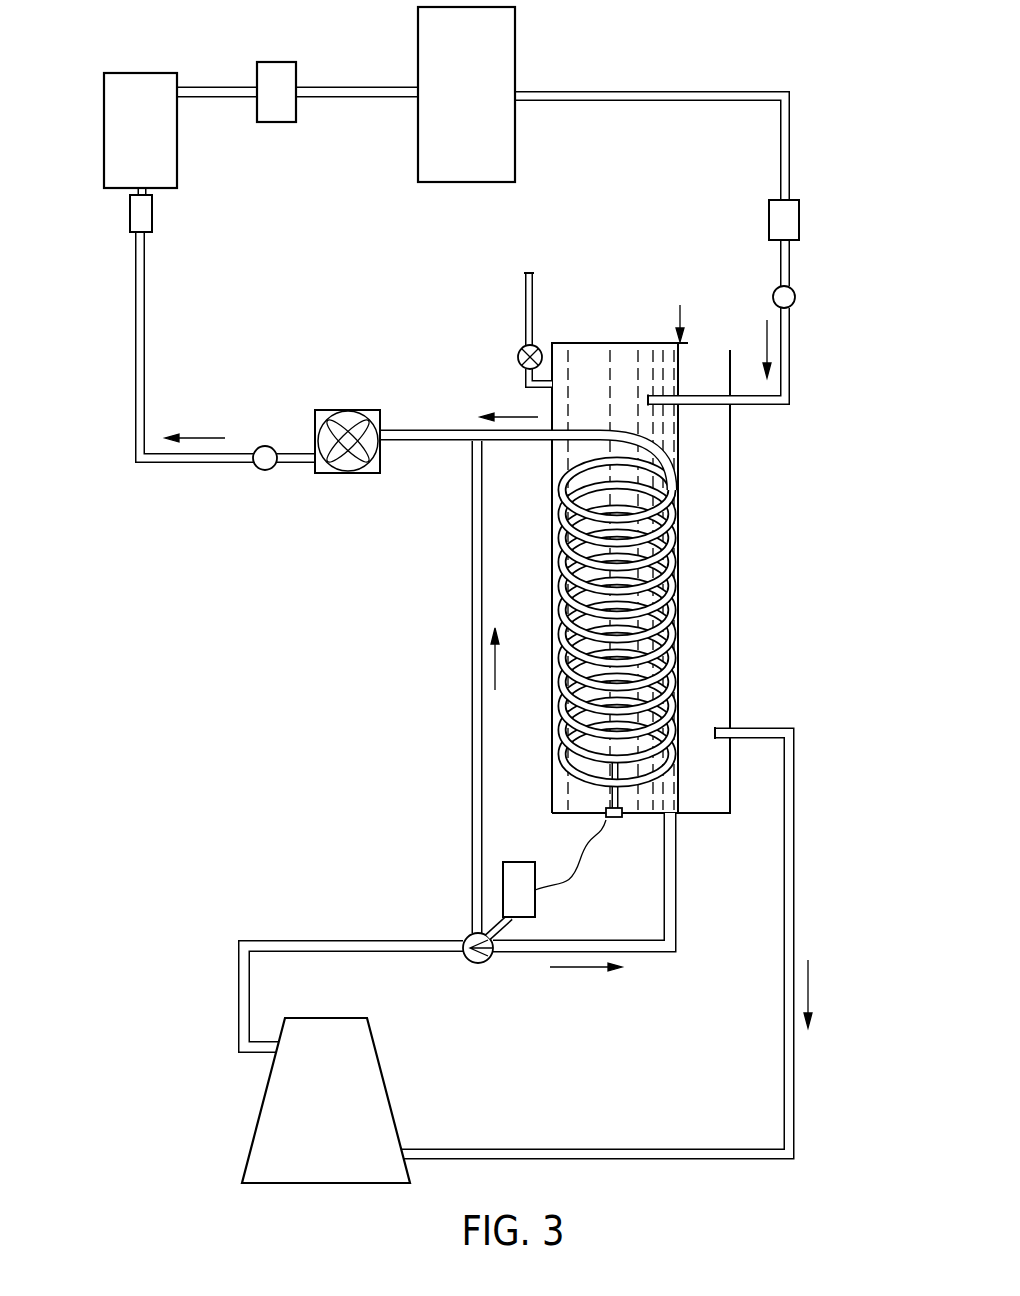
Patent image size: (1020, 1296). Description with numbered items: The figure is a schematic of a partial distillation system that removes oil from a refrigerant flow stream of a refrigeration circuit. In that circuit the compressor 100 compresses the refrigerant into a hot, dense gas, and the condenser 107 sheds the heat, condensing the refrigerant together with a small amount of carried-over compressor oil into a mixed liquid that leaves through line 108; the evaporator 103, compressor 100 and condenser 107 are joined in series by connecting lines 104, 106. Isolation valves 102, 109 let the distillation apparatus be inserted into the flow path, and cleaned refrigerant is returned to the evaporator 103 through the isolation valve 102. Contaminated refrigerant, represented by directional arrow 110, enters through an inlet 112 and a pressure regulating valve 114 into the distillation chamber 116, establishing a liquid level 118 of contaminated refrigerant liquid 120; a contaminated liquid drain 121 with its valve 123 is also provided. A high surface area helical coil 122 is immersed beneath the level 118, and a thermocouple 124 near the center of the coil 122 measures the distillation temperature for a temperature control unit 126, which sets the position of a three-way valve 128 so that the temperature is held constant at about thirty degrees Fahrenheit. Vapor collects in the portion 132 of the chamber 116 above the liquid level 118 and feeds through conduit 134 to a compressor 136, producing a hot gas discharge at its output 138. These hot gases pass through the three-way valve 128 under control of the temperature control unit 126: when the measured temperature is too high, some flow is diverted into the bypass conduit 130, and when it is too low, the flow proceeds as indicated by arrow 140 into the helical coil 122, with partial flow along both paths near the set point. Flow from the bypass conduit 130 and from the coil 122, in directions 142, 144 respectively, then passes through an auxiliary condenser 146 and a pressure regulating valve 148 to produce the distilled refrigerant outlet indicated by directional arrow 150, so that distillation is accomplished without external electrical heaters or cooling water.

The compressor 100 is at (258, 104).
The isolation valve 102 is at (128, 215).
The evaporator 103 is at (162, 134).
The supply line 104 is at (232, 87).
The supply line 106 is at (365, 87).
The condenser 107 is at (488, 104).
The line 108 is at (592, 113).
The isolation valve 109 is at (798, 215).
The directional arrow 110 is at (765, 318).
The inlet 112 is at (791, 258).
The pressure regulating valve 114 is at (796, 300).
The distillation chamber 116 is at (731, 512).
The liquid level 118 is at (680, 306).
The contaminated refrigerant liquid 120 is at (594, 343).
The contaminated liquid drain 121 is at (520, 383).
The helical coil 122 is at (682, 596).
The valve 123 is at (520, 350).
The thermocouple 124 is at (618, 822).
The temperature control unit 126 is at (537, 900).
The three-way valve 128 is at (482, 962).
The bypass conduit 130 is at (474, 748).
The portion of distillation chamber 132 is at (710, 815).
The conduit 134 is at (796, 855).
The compressor 136 is at (305, 1139).
The output 138 is at (283, 1045).
The arrow 140 is at (581, 914).
The direction 142 is at (517, 661).
The direction 144 is at (492, 416).
The auxiliary condenser 146 is at (384, 478).
The pressure regulating valve 148 is at (276, 470).
The outlet 150 is at (222, 437).